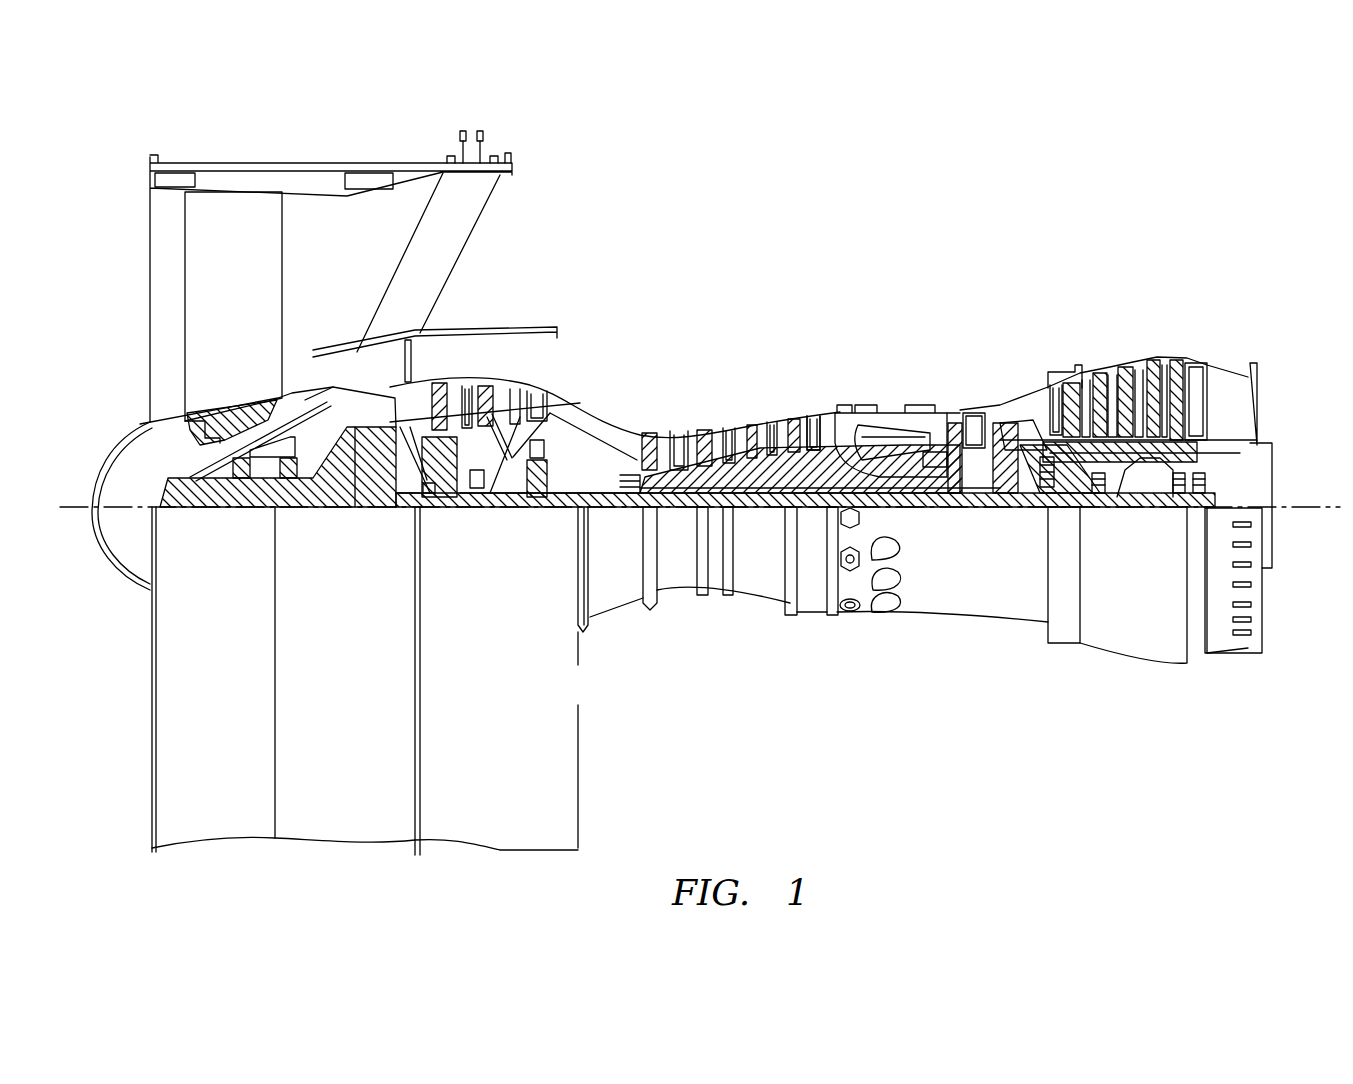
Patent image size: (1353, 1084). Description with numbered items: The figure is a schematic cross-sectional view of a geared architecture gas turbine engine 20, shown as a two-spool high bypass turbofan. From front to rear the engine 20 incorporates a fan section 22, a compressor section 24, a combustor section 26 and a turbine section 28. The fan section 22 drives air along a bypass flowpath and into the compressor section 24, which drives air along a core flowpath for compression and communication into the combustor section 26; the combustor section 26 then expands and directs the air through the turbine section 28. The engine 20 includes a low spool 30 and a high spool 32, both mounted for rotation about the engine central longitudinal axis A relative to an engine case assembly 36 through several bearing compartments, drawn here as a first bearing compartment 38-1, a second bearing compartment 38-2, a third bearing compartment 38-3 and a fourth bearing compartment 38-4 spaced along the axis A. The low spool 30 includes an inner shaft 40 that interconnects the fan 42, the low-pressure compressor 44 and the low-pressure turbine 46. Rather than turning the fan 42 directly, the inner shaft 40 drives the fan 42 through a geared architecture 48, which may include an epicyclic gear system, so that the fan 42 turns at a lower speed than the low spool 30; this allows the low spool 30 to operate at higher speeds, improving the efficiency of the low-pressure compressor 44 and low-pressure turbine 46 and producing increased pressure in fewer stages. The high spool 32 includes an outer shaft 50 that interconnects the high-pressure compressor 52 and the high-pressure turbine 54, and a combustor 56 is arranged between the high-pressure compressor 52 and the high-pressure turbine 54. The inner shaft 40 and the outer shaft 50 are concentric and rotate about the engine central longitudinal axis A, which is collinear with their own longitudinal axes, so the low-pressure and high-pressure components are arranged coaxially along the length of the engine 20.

The gas turbine engine 20 is at (1013, 218).
The fan section 22 is at (415, 143).
The compressor section 24 is at (420, 290).
The combustor section 26 is at (840, 290).
The turbine section 28 is at (1198, 290).
The low spool 30 is at (765, 510).
The high spool 32 is at (803, 433).
The engine case assembly 36 is at (813, 613).
The bearing compartment 38-1 is at (208, 568).
The bearing compartment 38-2 is at (512, 632).
The bearing compartment 38-3 is at (1040, 527).
The bearing compartment 38-4 is at (1200, 520).
The inner shaft 40 is at (603, 500).
The fan 42 is at (239, 316).
The low-pressure compressor 44 is at (502, 390).
The low-pressure turbine 46 is at (1125, 367).
The geared architecture 48 is at (373, 488).
The outer shaft 50 is at (883, 482).
The high-pressure compressor 52 is at (750, 470).
The high-pressure turbine 54 is at (972, 407).
The combustor 56 is at (895, 443).
The engine central longitudinal axis A is at (1326, 503).